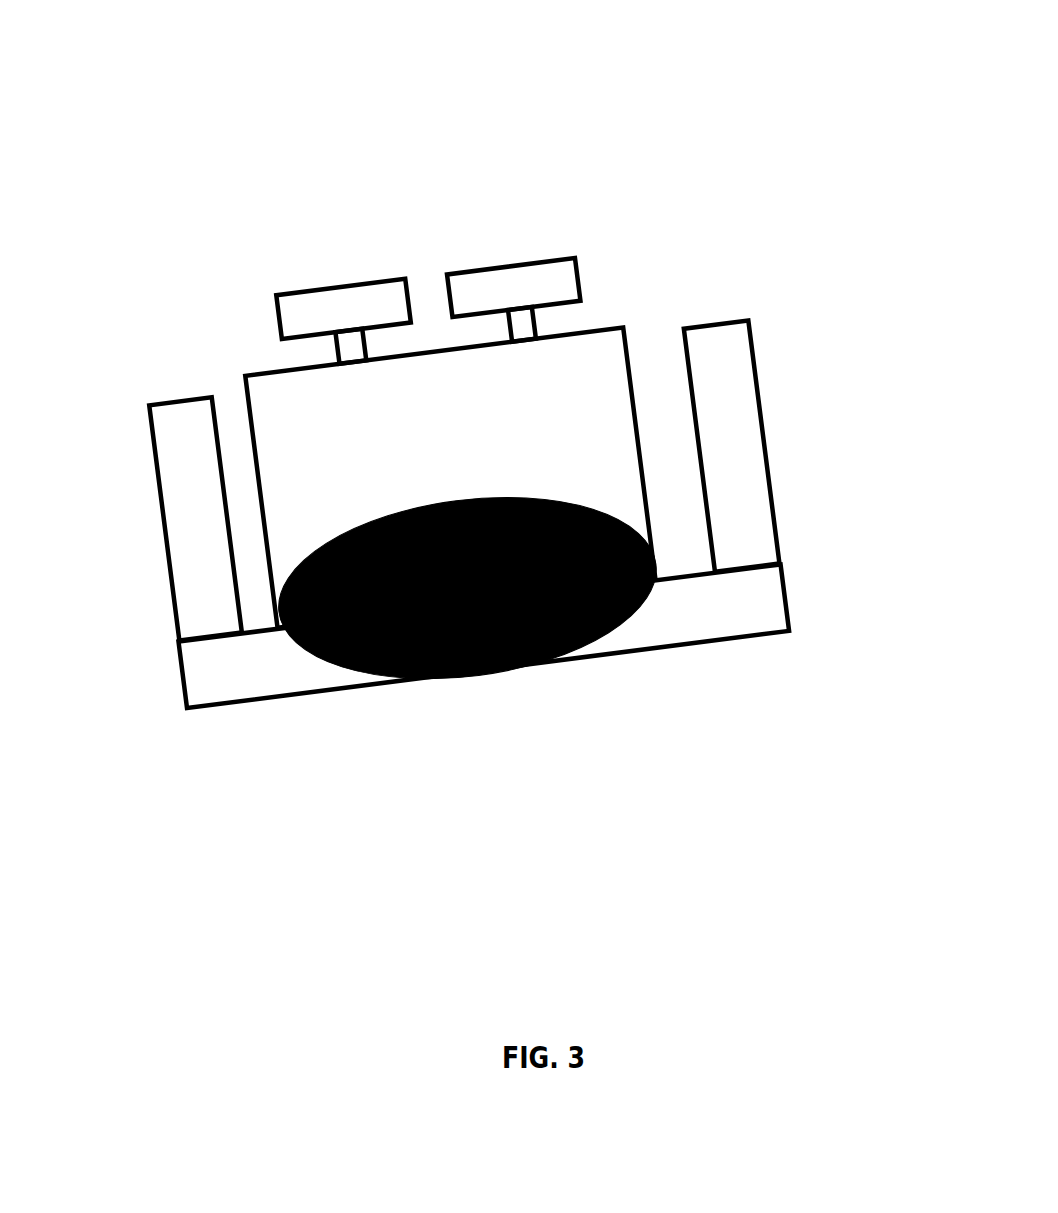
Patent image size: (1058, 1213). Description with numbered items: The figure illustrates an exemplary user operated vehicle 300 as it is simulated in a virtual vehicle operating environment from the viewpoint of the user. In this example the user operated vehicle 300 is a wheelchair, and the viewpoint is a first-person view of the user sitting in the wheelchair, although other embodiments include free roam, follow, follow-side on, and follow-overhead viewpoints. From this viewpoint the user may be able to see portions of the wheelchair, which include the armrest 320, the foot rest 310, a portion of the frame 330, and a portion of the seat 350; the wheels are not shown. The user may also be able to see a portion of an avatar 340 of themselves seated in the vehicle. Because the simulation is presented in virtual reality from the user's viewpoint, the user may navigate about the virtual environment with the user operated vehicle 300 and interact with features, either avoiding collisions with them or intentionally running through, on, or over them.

The user operated vehicle 300 is at (202, 195).
The foot rest 310 is at (535, 260).
The armrest 320 is at (757, 486).
The frame 330 is at (720, 623).
The avatar 340 is at (439, 753).
The seat 350 is at (605, 355).